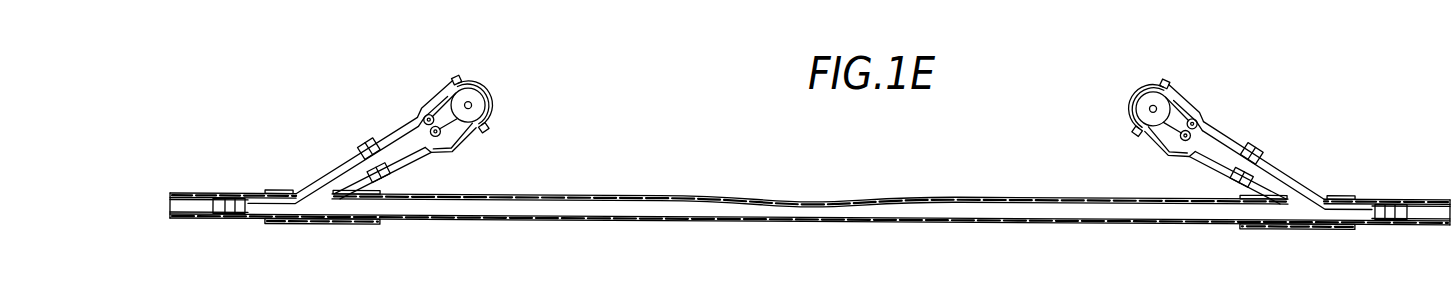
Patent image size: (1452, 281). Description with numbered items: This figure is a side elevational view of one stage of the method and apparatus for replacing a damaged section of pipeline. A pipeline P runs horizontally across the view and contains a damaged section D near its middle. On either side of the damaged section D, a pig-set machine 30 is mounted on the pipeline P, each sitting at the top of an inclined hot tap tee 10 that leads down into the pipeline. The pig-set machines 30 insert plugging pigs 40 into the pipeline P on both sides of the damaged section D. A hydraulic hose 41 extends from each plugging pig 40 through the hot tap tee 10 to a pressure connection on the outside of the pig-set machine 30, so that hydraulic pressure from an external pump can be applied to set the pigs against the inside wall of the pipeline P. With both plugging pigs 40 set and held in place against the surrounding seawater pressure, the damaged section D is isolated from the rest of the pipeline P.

The hot tap tee 10 is at (333, 162).
The pig-set machine 30 is at (435, 90).
The plugging pig 40 is at (233, 190).
The hydraulic hose 41 is at (323, 197).
The pipeline P is at (202, 226).
The damaged section D is at (822, 201).